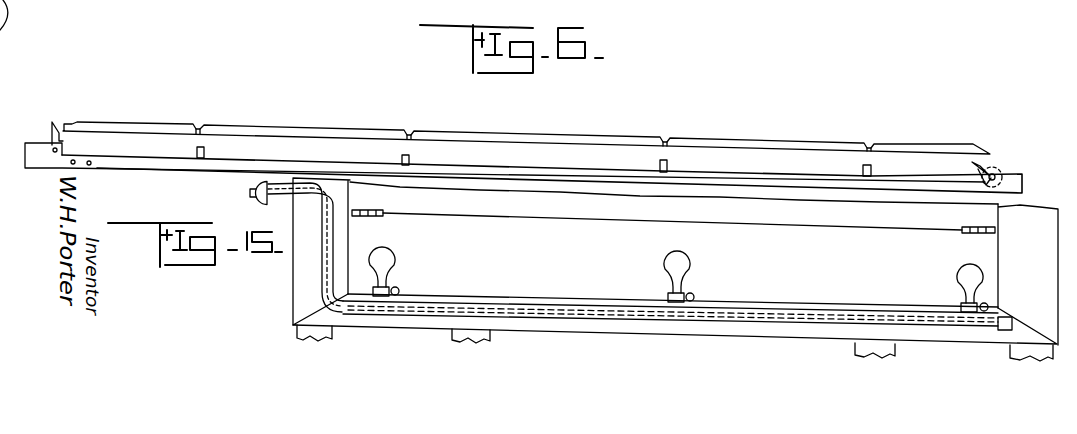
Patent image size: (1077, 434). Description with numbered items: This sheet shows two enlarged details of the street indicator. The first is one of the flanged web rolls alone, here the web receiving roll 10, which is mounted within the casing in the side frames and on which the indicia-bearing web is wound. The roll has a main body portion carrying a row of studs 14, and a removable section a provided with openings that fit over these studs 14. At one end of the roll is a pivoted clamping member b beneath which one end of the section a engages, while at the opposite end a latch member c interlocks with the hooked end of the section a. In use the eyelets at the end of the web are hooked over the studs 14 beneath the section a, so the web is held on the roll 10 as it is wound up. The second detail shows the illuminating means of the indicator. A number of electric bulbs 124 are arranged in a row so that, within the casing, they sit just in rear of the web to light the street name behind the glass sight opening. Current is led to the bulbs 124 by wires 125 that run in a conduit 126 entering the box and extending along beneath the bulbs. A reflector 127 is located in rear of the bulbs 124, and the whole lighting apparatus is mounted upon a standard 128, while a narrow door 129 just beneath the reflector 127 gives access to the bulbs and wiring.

In FIG. 6, the upper flanged web receiving roll 10 is at (43, 159).
In FIG. 6, the studs 14 is at (862, 170).
In FIG. 6, the removable section a is at (303, 130).
In FIG. 6, the pivoted clamping member b is at (986, 166).
In FIG. 6, the latch member c is at (63, 121).
In FIG. 15, the electric bulbs 124 is at (960, 278).
In FIG. 15, the wires 125 is at (280, 195).
In FIG. 15, the conduit 126 is at (320, 265).
In FIG. 15, the reflector 127 is at (673, 217).
In FIG. 15, the standard 128 is at (297, 326).
In FIG. 15, the narrow door 129 is at (674, 228).